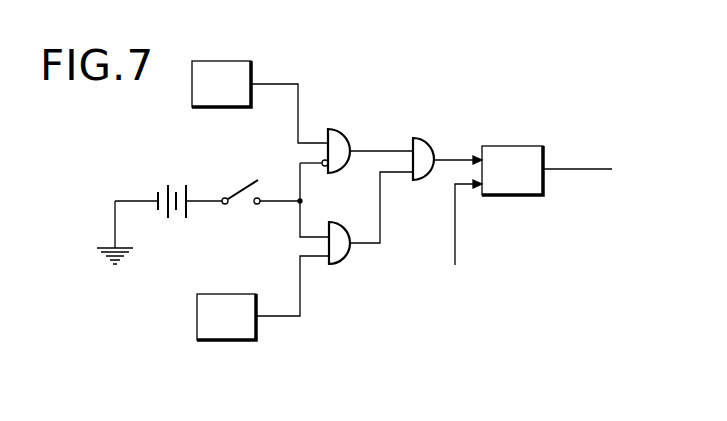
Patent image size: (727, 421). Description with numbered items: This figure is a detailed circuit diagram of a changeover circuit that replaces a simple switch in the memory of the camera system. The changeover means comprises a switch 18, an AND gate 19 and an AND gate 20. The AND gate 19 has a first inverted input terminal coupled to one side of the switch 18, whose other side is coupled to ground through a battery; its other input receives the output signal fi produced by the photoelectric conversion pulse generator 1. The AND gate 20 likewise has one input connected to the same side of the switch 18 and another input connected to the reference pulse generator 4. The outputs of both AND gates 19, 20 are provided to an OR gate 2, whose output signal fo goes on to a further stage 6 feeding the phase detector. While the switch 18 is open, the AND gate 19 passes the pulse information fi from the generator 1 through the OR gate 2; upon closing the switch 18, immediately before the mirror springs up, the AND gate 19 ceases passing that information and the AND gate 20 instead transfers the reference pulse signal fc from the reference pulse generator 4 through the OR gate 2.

The photoelectric conversion pulse generator 1 is at (218, 68).
The reference pulse generator 4 is at (235, 305).
The switch 18 is at (240, 186).
The AND gate 19 is at (339, 143).
The AND gate 20 is at (344, 254).
The OR gate 2 is at (430, 136).
The output circuit 6 is at (520, 158).